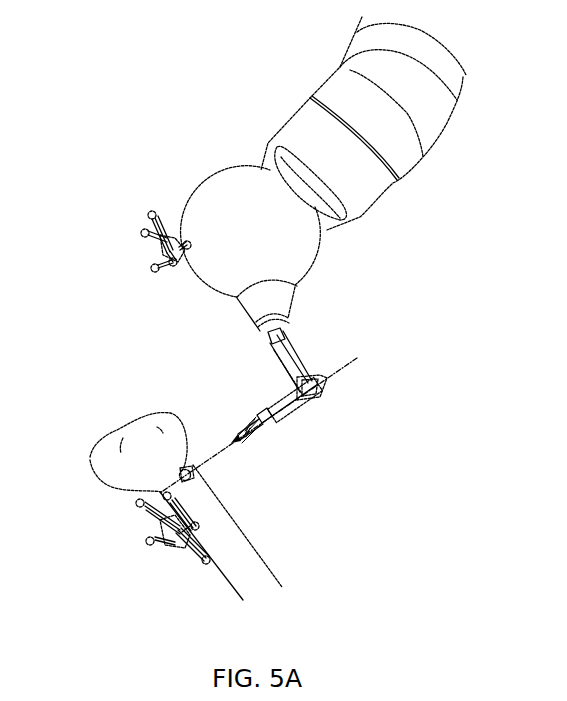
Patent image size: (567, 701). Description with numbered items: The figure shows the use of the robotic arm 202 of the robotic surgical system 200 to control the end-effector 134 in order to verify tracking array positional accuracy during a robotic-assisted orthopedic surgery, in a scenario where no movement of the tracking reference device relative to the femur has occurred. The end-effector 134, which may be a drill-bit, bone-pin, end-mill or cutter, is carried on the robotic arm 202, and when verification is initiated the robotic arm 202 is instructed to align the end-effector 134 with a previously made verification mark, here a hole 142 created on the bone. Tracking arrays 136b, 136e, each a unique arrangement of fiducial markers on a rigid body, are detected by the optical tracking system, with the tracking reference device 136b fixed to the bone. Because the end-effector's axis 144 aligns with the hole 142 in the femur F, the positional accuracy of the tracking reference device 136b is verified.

The robotic surgical system 200 is at (196, 87).
The robotic arm 202 is at (445, 125).
The end-effector 134 is at (270, 423).
The tracking reference device 136b is at (153, 544).
The tracking array 136e is at (156, 212).
The hole 142 is at (184, 469).
The end-effector's axis 144 is at (356, 362).
The applied force F is at (93, 460).